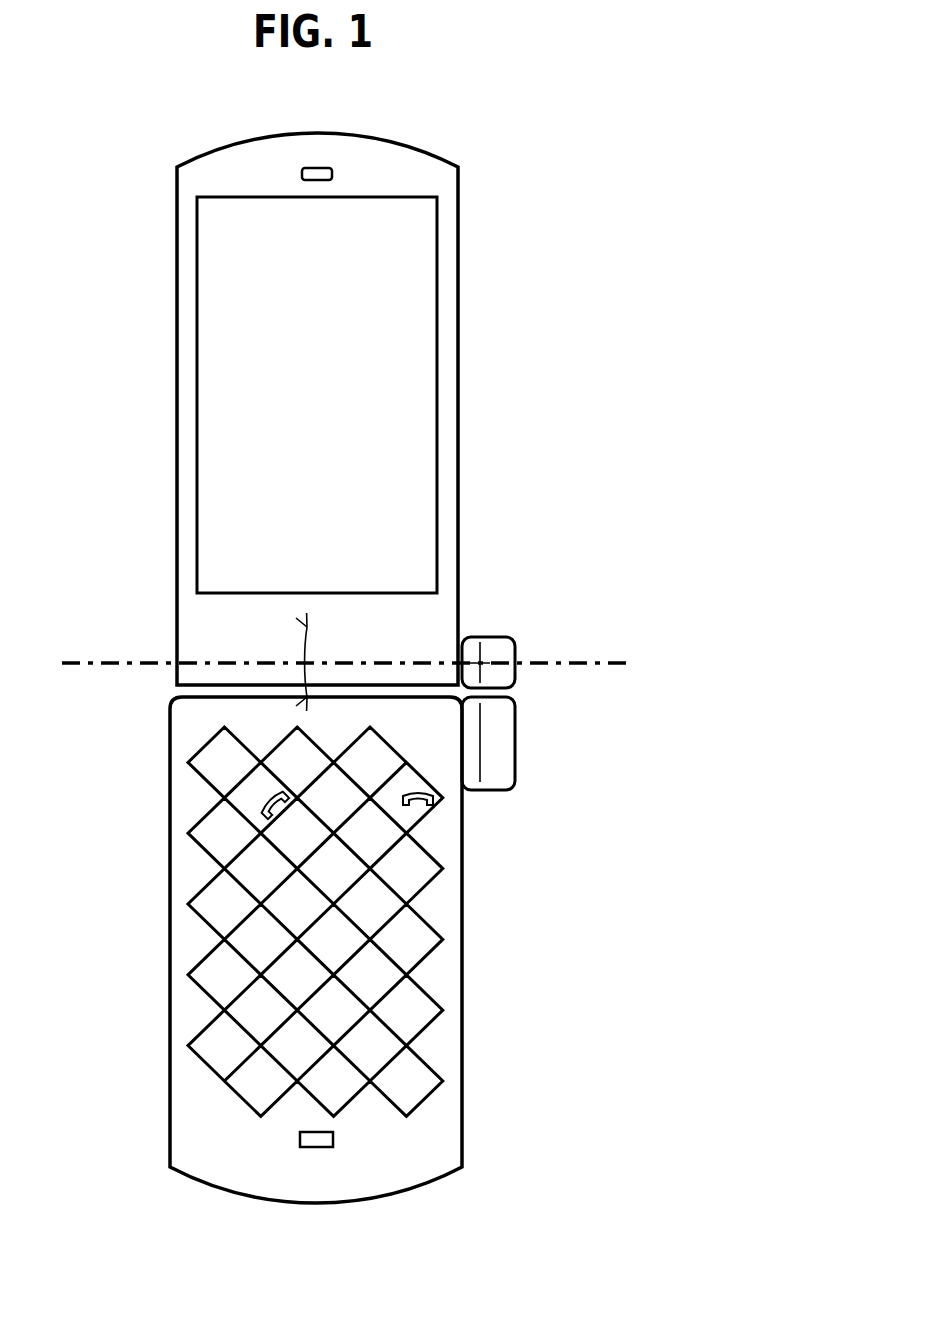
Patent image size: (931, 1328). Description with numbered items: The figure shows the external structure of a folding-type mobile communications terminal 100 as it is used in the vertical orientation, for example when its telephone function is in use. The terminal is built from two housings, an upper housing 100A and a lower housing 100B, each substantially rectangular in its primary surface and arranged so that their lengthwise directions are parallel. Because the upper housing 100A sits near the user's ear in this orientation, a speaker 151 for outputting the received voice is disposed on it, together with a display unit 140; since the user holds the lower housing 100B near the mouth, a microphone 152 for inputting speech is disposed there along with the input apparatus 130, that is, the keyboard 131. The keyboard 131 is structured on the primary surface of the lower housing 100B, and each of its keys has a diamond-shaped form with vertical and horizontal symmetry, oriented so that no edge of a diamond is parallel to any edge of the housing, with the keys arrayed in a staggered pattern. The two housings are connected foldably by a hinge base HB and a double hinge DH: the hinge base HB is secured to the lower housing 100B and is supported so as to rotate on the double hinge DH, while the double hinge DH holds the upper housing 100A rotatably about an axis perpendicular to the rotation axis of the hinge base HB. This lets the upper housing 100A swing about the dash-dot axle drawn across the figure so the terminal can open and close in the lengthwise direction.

The mobile communications terminal 100 is at (522, 79).
The upper housing 100A is at (331, 392).
The lower housing 100B is at (352, 973).
The display unit 140 is at (212, 242).
The speaker 151 is at (307, 172).
The microphone 152 is at (300, 1143).
The input apparatus 130 is at (269, 922).
The keyboard 131 is at (197, 725).
The double hinge DH is at (493, 647).
The hinge base HB is at (503, 773).